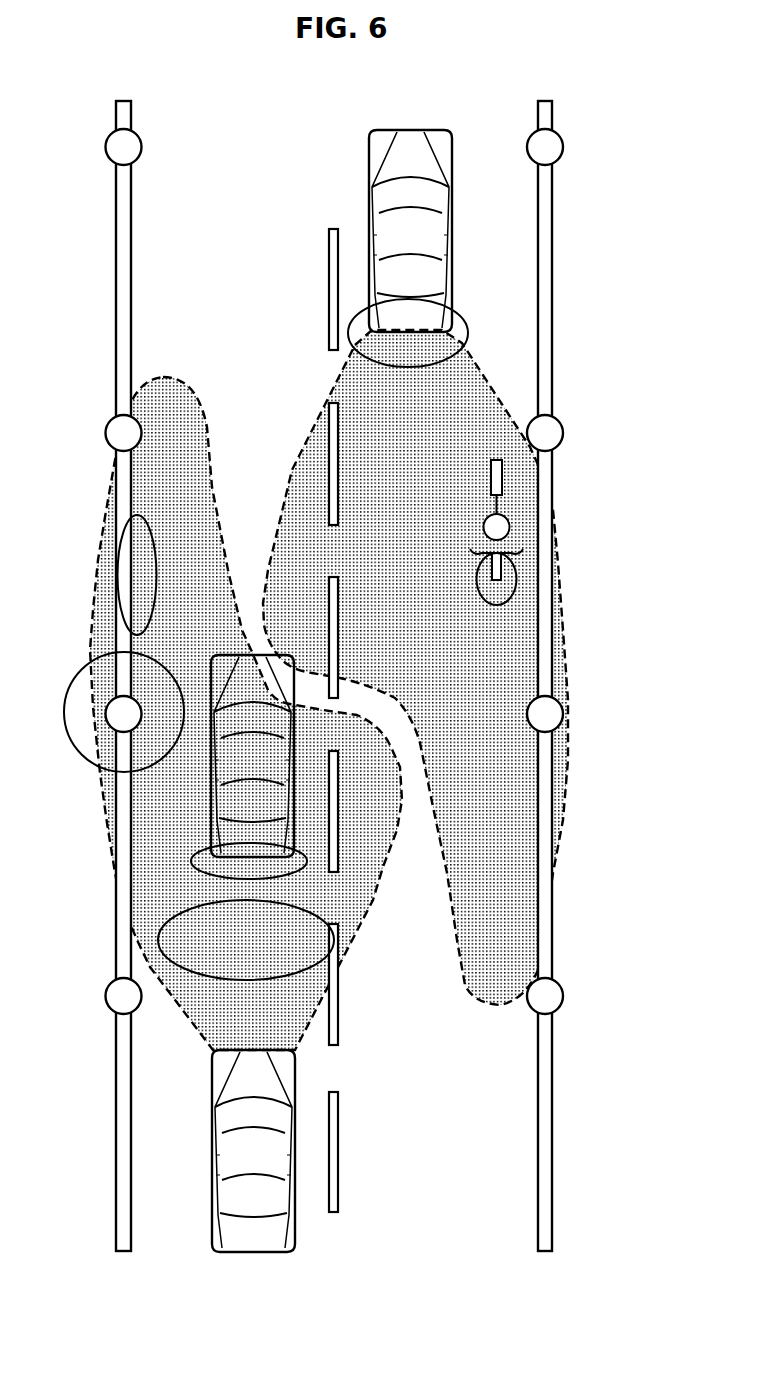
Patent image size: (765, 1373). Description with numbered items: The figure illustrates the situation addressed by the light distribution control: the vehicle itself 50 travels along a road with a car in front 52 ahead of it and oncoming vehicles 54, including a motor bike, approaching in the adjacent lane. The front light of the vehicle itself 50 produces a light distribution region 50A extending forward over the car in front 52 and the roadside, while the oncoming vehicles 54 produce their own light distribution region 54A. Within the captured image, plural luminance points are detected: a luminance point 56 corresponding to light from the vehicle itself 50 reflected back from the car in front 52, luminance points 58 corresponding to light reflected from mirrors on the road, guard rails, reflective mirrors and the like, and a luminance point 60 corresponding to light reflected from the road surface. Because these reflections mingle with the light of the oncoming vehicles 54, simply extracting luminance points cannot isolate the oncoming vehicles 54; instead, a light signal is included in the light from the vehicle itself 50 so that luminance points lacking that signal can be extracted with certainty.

The vehicle itself 50 is at (295, 1230).
The light distribution region of the vehicle itself 50A is at (375, 905).
The car in front 52 is at (270, 653).
The oncoming vehicles 54 is at (428, 229).
The light distribution region of the oncoming vehicles 54A is at (563, 803).
The luminance point 56 is at (207, 853).
The luminance point 58 is at (130, 522).
The luminance point 60 is at (183, 901).